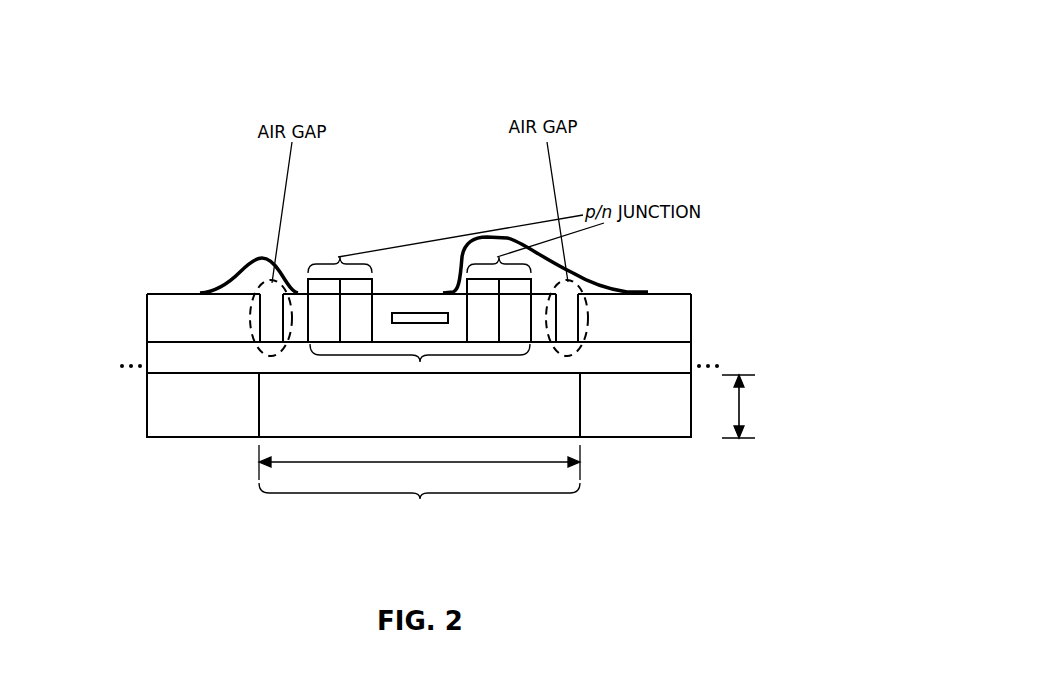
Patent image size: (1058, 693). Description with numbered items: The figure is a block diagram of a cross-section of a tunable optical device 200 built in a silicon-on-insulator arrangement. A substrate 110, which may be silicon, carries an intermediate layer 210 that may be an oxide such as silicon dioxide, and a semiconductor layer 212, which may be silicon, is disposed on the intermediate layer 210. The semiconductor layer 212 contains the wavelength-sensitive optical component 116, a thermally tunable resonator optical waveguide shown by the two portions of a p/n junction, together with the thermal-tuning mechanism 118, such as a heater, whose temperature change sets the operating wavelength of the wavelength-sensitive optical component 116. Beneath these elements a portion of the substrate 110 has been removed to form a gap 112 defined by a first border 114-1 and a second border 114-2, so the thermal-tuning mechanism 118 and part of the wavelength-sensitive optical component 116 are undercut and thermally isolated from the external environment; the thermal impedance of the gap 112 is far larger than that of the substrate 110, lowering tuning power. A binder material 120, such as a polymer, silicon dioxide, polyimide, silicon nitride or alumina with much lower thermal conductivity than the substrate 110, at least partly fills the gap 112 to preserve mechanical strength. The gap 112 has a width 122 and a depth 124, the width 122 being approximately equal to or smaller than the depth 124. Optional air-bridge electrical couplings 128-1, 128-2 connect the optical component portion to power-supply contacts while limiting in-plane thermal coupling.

The tunable optical device 200 is at (634, 63).
The semiconductor layer 212 is at (430, 307).
The intermediate layer 210 is at (633, 353).
The border 114-1 is at (258, 391).
The border 114-2 is at (580, 390).
The substrate 110 is at (697, 473).
The binder material 120 is at (418, 408).
The electrical coupling 128-1 is at (247, 267).
The electrical coupling 128-2 is at (600, 290).
The wavelength-sensitive optical component 116 is at (417, 360).
The thermal-tuning mechanism 118 is at (412, 323).
The gap 112 is at (420, 498).
The width 122 is at (443, 463).
The depth 124 is at (739, 405).